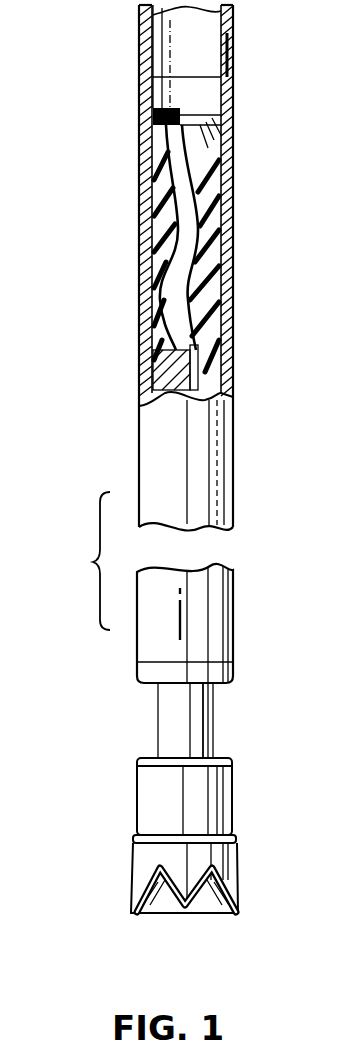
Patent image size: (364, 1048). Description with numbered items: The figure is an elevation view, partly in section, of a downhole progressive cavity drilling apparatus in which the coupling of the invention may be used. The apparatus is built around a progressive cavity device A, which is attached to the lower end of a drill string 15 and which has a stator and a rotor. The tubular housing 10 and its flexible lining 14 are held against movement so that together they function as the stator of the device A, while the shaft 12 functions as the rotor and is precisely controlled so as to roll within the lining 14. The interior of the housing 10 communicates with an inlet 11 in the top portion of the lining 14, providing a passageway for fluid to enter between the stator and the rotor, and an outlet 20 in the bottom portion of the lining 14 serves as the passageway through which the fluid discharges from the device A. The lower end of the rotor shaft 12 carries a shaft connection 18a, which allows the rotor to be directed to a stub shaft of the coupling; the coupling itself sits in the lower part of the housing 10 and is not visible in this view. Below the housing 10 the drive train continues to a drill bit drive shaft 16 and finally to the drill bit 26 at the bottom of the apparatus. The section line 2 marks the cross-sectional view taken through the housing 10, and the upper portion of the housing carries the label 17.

The progressive cavity device A is at (120, 230).
The section line 2 is at (200, 360).
The housing 10 is at (141, 95).
The inlet 11 is at (195, 128).
The shaft 12 is at (166, 138).
The flexible lining 14 is at (210, 184).
The drill string 15 is at (140, 20).
The drill bit drive shaft 16 is at (204, 730).
The insert 17 is at (204, 42).
The shaft connection 18a is at (141, 407).
The outlet 20 is at (200, 342).
The drill bit 26 is at (207, 910).